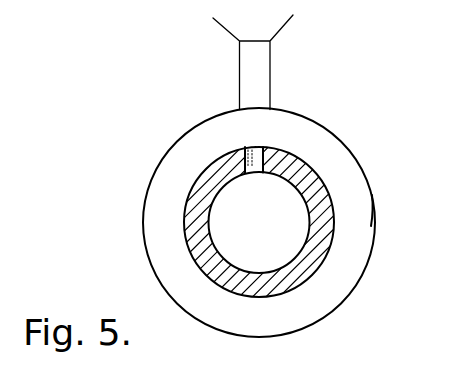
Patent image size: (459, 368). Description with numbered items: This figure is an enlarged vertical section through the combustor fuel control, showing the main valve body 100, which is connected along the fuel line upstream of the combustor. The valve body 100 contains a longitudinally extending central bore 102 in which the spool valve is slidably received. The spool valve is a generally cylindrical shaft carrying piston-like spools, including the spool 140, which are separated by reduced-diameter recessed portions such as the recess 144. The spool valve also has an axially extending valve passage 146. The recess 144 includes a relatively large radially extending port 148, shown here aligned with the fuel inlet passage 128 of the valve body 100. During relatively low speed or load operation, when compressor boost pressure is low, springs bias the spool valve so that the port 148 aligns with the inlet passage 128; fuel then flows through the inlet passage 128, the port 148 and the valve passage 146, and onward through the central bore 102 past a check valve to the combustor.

The main valve body 100 is at (427, 172).
The central bore 102 is at (372, 211).
The fuel inlet passage 128 is at (270, 79).
The spool 140 is at (345, 150).
The recessed portion 144 is at (202, 172).
The valve passage 146 is at (303, 243).
The port 148 is at (262, 155).